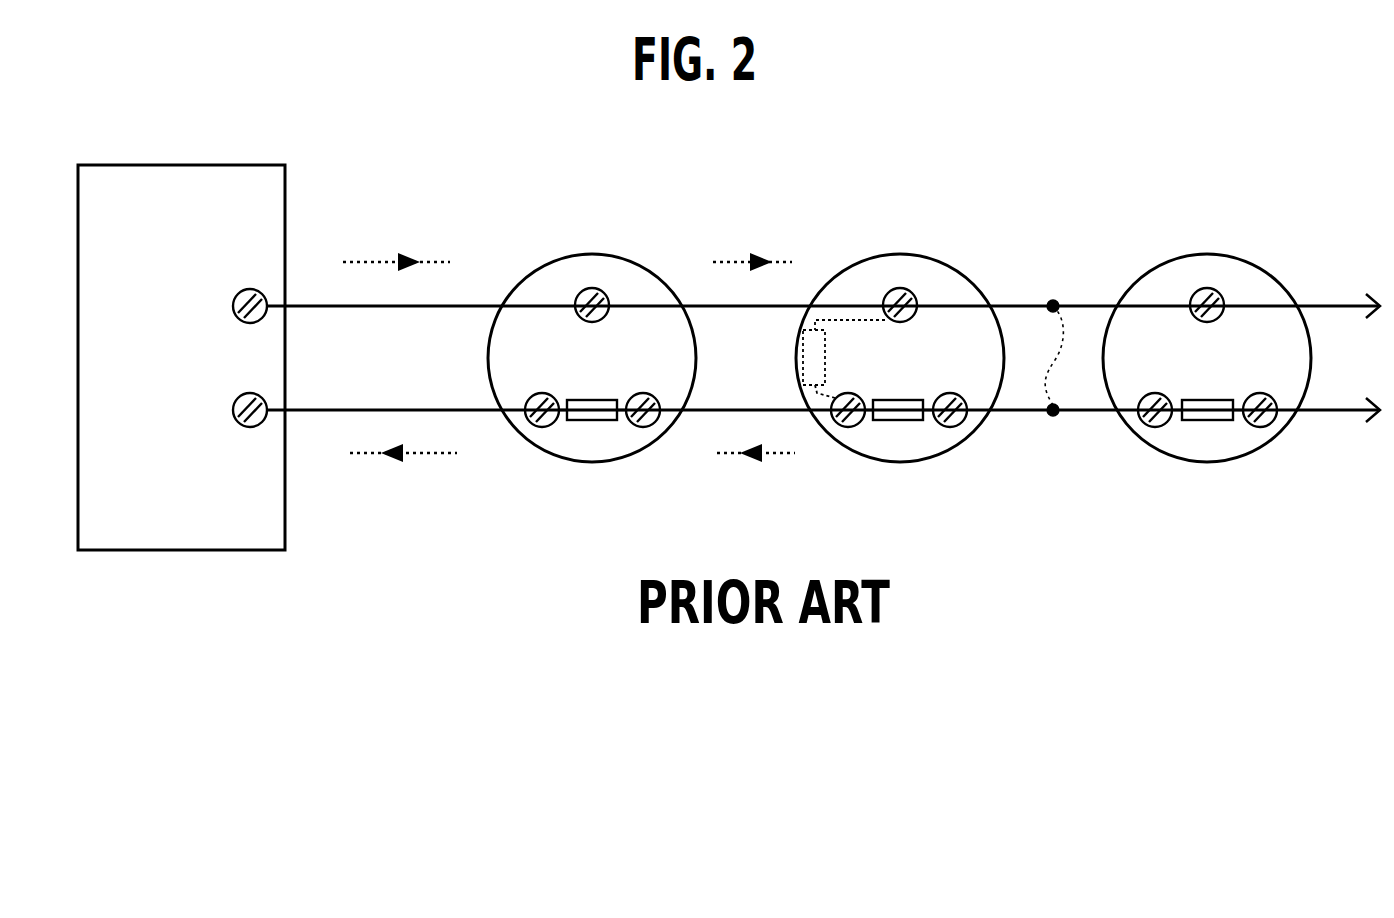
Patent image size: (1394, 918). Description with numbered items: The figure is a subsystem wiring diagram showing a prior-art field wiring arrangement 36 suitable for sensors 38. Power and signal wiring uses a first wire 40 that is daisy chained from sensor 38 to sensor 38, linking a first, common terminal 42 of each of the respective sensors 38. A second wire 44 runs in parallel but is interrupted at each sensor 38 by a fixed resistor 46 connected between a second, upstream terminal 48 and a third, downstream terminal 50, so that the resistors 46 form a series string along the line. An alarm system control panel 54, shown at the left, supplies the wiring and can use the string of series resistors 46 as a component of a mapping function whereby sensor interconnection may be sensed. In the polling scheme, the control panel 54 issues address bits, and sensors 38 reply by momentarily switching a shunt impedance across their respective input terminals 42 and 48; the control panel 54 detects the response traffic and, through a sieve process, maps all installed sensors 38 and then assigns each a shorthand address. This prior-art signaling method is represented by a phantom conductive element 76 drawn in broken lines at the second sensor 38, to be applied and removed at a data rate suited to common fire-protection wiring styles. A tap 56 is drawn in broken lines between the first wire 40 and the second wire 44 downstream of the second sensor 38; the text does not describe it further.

The field wiring arrangement 36 is at (970, 160).
The sensor 38 is at (593, 463).
The first wire 40 is at (737, 307).
The first, common terminal 42 is at (592, 288).
The second wire 44 is at (710, 411).
The fixed resistor 46 is at (595, 400).
The second, upstream terminal 48 is at (538, 427).
The third, downstream terminal 50 is at (643, 427).
The alarm system control panel 54 is at (194, 370).
The tap connection 56 is at (1060, 344).
The phantom conductive element 76 is at (781, 393).